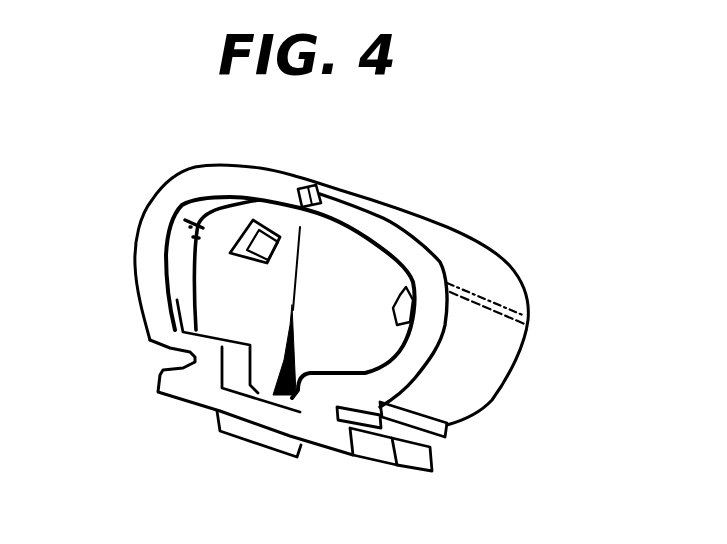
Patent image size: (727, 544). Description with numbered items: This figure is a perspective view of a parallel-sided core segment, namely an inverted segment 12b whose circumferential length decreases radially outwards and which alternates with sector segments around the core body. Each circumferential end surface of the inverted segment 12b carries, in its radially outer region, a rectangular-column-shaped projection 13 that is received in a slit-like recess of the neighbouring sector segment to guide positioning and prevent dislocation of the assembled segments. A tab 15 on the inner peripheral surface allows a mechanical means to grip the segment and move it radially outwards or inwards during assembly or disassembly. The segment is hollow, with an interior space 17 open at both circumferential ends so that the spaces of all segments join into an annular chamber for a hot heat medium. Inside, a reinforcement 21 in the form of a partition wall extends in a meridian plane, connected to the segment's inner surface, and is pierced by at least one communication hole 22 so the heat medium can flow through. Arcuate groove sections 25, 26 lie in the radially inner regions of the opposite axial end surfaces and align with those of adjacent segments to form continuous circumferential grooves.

The inverted segment 12b is at (502, 273).
The projection 13 is at (310, 187).
The tab 15 is at (260, 433).
The interior space 17 is at (200, 197).
The reinforcement 21 is at (217, 277).
The communication hole 22 is at (265, 265).
The groove section 25 is at (393, 465).
The groove section 26 is at (167, 350).